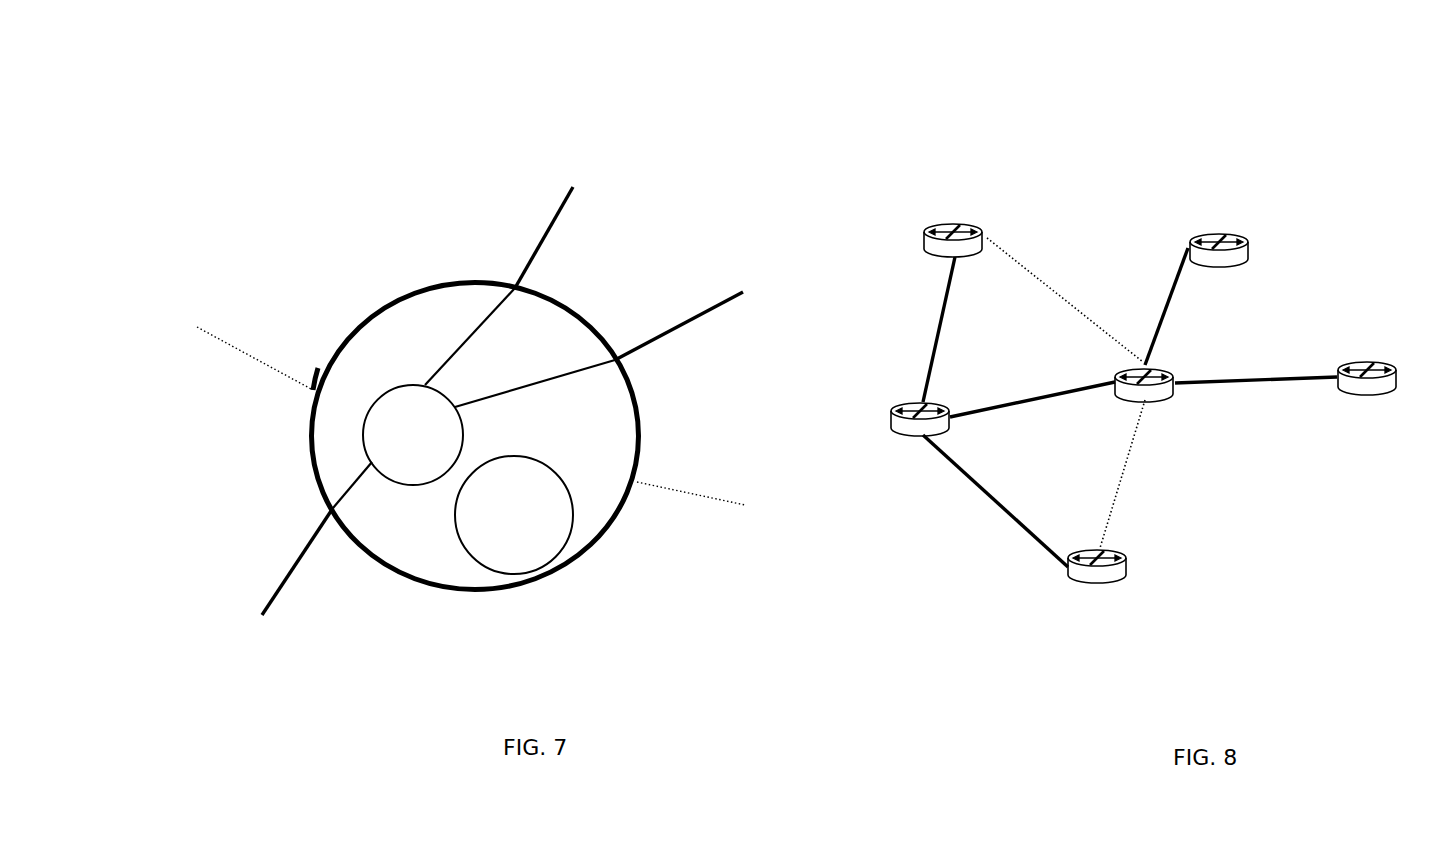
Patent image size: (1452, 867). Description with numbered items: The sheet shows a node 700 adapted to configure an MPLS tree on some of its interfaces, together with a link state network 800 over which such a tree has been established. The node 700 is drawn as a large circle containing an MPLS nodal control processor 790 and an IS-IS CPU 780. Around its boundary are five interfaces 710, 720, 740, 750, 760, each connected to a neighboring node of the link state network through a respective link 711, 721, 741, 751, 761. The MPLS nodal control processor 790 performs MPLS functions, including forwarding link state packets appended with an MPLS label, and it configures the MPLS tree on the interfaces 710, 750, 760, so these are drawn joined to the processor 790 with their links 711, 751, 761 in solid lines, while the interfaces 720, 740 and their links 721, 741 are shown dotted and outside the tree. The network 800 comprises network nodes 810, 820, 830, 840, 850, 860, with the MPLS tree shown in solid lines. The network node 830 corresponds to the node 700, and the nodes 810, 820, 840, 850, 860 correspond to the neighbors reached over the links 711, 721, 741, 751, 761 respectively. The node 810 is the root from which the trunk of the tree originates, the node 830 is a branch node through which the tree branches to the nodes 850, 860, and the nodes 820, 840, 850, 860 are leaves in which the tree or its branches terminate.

In FIG. 7, the node 700 is at (227, 100).
In FIG. 7, the interface 710 is at (361, 490).
In FIG. 7, the link 711 is at (288, 579).
In FIG. 7, the interface 720 is at (475, 436).
In FIG. 7, the link 721 is at (720, 500).
In FIG. 7, the interface 740 is at (341, 383).
In FIG. 7, the link 741 is at (240, 346).
In FIG. 7, the interface 750 is at (486, 336).
In FIG. 7, the link 751 is at (561, 223).
In FIG. 7, the interface 760 is at (535, 375).
In FIG. 7, the link 761 is at (702, 316).
In FIG. 7, the IS-IS CPU 780 is at (540, 561).
In FIG. 7, the MPLS nodal control processor 790 is at (438, 476).
In FIG. 8, the link state network 800 is at (837, 150).
In FIG. 8, the network node 810 is at (919, 437).
In FIG. 8, the network node 820 is at (1097, 578).
In FIG. 8, the network node 830 is at (1151, 398).
In FIG. 8, the network node 840 is at (932, 244).
In FIG. 8, the network node 850 is at (1243, 247).
In FIG. 8, the network node 860 is at (1389, 378).